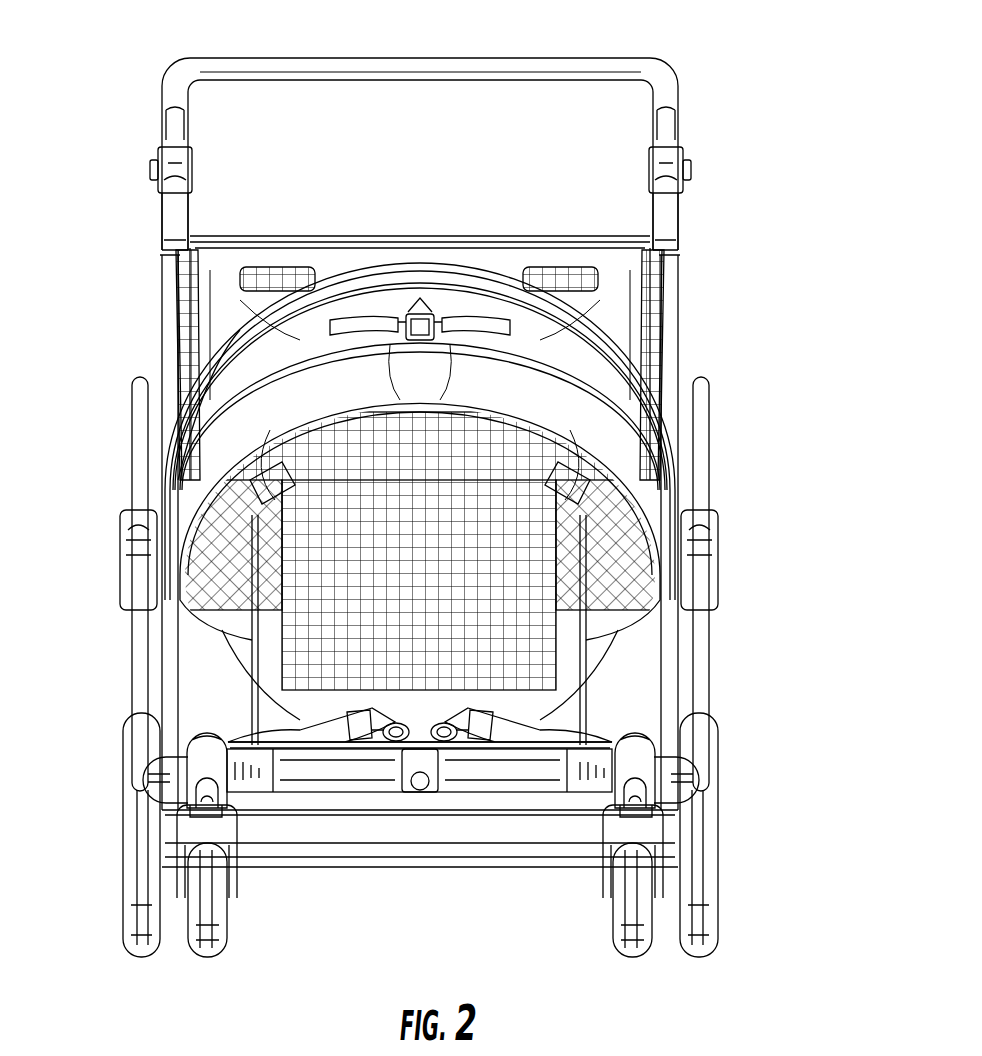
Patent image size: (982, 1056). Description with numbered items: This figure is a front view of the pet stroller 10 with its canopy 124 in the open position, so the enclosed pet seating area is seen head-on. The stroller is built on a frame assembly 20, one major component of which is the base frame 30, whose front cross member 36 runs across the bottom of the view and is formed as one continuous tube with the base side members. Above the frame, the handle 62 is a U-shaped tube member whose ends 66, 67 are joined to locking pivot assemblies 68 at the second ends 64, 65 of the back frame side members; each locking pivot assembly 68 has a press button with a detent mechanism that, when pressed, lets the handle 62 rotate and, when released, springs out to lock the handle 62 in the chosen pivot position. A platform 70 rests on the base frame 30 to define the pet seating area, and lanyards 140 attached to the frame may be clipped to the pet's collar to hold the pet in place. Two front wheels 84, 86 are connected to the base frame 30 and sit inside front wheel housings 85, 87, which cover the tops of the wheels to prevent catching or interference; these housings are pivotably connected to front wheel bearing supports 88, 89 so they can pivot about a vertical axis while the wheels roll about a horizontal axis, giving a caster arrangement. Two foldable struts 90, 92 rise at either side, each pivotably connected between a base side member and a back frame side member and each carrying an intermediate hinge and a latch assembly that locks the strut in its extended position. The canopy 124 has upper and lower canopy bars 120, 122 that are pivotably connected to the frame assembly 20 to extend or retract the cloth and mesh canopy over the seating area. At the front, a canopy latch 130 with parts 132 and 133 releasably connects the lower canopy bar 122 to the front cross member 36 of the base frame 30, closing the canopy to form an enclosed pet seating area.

The pet stroller 10 is at (806, 200).
The frame assembly 20 is at (737, 746).
The base frame 30 is at (112, 718).
The front cross member 36 is at (335, 775).
The handle 62 is at (397, 58).
The second end of first side member 64 is at (162, 215).
The second end of second side member 65 is at (680, 212).
The handle end 66 is at (160, 106).
The handle end 67 is at (678, 100).
The locking pivot assembly 68 is at (150, 170).
The platform 70 is at (592, 745).
The front wheel 84 is at (208, 958).
The front wheel housing 85 is at (190, 830).
The front wheel 86 is at (633, 958).
The front wheel housing 87 is at (652, 830).
The front wheel bearing support 88 is at (200, 750).
The front wheel bearing support 89 is at (645, 770).
The foldable strut 90 is at (130, 625).
The foldable strut 92 is at (712, 680).
The upper canopy bar 120 is at (602, 330).
The lower canopy bar 122 is at (410, 312).
The canopy 124 is at (228, 372).
The canopy latch 130 is at (416, 308).
The canopy latch part 132 is at (430, 312).
The canopy latch part 133 is at (420, 792).
The lanyard 140 is at (300, 720).